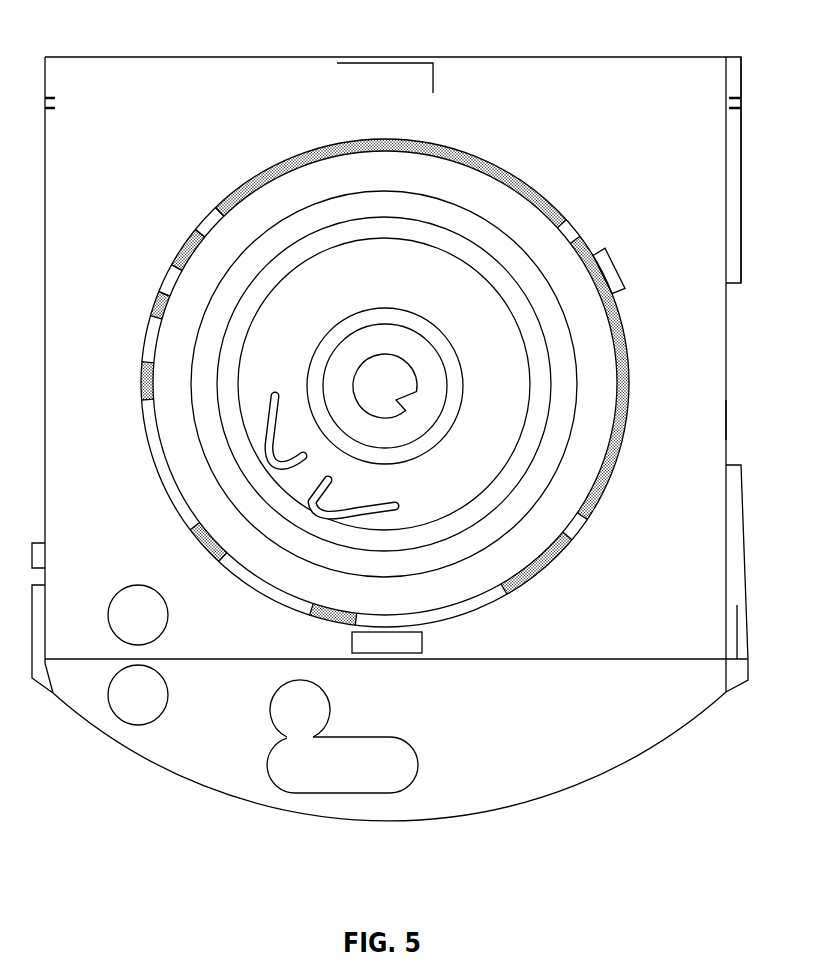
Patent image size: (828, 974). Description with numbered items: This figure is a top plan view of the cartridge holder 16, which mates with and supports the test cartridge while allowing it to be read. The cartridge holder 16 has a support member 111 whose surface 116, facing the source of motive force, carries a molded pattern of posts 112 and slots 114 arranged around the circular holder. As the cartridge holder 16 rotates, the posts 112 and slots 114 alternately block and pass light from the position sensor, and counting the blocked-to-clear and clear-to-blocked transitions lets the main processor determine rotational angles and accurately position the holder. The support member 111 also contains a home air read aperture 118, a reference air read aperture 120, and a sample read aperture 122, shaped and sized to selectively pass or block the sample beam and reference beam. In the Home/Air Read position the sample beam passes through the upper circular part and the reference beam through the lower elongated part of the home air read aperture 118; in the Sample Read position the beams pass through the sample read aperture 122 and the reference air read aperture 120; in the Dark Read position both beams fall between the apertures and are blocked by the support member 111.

The cartridge holder 16 is at (609, 56).
The support member 111 is at (743, 230).
The posts 112 is at (305, 152).
The slots 114 is at (200, 228).
The surface 116 is at (703, 423).
The home air read aperture 118 is at (323, 778).
The reference air read aperture 120 is at (137, 726).
The sample read aperture 122 is at (140, 585).